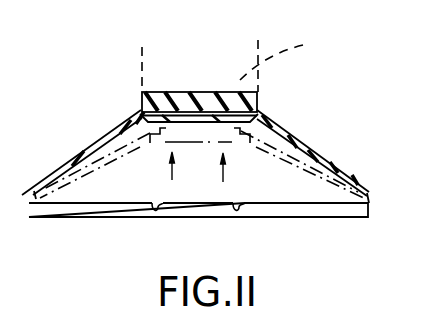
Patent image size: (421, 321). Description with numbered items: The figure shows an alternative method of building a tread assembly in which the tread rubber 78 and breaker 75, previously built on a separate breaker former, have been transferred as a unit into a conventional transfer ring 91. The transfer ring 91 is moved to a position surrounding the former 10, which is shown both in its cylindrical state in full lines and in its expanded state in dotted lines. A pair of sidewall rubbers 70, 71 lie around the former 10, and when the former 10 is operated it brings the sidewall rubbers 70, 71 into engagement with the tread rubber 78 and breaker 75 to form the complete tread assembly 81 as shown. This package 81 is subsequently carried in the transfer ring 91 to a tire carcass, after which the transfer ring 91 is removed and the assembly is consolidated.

The former 10 is at (298, 228).
The sidewall rubber 70 is at (113, 130).
The sidewall rubber 71 is at (308, 148).
The breaker 75 is at (152, 92).
The tread rubber strip 78 is at (258, 100).
The tread assembly 81 is at (211, 108).
The transfer ring 91 is at (239, 55).